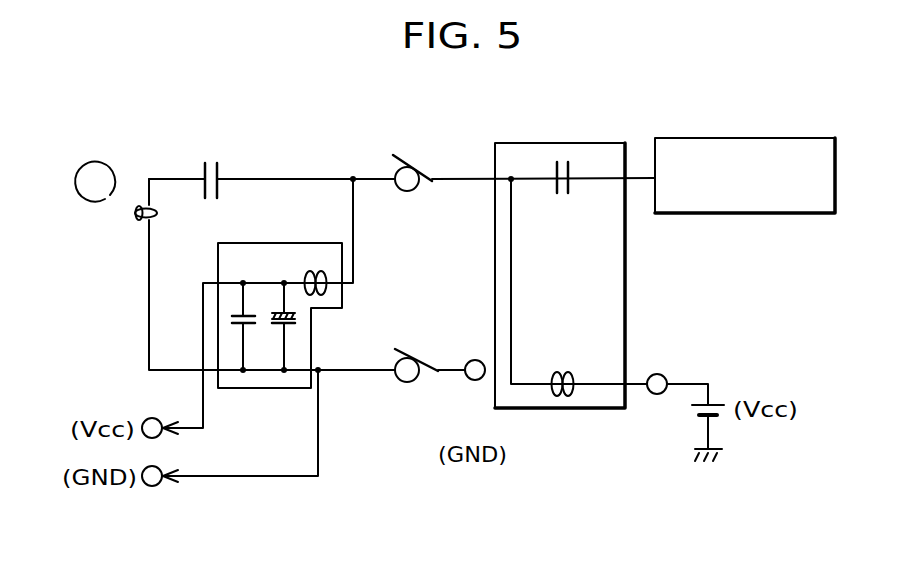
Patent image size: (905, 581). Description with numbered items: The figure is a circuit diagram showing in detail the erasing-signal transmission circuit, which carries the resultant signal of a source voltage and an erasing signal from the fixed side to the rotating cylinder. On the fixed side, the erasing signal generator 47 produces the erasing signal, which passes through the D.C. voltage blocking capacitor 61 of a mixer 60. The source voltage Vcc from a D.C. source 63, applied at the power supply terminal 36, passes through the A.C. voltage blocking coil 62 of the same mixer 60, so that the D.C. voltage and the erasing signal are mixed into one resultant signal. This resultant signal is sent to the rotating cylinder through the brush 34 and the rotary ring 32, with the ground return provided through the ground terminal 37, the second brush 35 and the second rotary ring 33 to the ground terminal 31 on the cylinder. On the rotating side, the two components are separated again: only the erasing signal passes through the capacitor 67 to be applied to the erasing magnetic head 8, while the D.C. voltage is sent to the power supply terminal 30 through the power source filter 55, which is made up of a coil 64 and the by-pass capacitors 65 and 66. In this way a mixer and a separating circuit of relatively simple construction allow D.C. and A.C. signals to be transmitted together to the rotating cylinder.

The erasing magnetic head 8 is at (108, 191).
The capacitor 67 is at (220, 170).
The power source filter 55 is at (282, 243).
The coil 64 is at (305, 276).
The by-pass capacitor 66 is at (232, 320).
The by-pass capacitor 65 is at (295, 325).
The brush 34 is at (412, 166).
The rotary ring 32 is at (403, 192).
The brush 35 is at (414, 356).
The rotary ring 33 is at (403, 383).
The ground terminal 37 is at (475, 381).
The mixer 60 is at (598, 143).
The D.C. voltage blocking capacitor 61 is at (562, 197).
The A.C. voltage blocking coil 62 is at (562, 371).
The erasing signal generator 47 is at (757, 138).
The power supply terminal 36 is at (657, 395).
The D.C. source 63 is at (718, 401).
The power supply terminal 30 is at (146, 419).
The ground terminal 31 is at (152, 487).